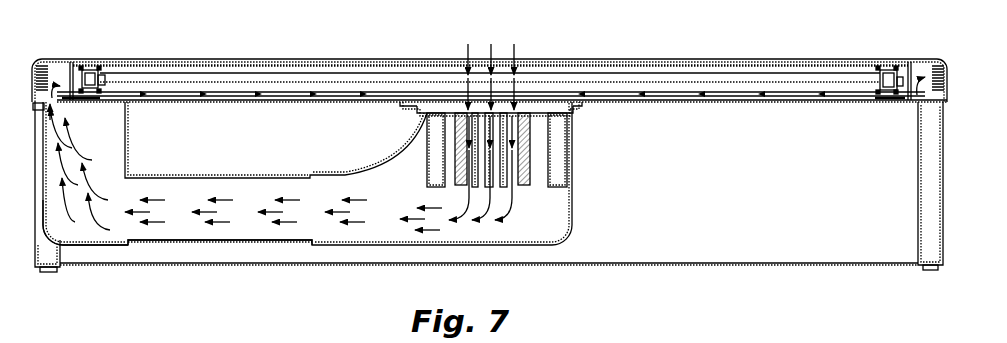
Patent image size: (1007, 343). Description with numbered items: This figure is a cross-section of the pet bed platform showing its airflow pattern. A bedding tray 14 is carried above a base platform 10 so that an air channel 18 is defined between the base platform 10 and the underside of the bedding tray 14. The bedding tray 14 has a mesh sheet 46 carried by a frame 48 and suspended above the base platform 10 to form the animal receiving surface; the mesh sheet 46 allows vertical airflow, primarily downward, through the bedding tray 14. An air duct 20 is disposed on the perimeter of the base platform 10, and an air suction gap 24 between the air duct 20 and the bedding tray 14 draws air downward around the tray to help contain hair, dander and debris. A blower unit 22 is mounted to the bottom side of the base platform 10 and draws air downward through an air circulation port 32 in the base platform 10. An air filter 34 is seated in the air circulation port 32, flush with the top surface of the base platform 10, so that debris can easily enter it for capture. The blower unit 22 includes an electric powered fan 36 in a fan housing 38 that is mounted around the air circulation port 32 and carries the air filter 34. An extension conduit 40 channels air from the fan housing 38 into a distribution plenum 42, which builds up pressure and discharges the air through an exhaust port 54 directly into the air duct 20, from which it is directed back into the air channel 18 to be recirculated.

The base platform 10 is at (833, 103).
The bedding tray 14 is at (242, 62).
The air channel 18 is at (780, 102).
The air duct 20 is at (49, 60).
The blower unit 22 is at (562, 229).
The air suction gap 24 is at (72, 67).
The air circulation port 32 is at (583, 105).
The air filter 34 is at (570, 115).
The electric powered fan 36 is at (550, 162).
The fan housing 38 is at (398, 135).
The extension conduit 40 is at (237, 239).
The distribution plenum 42 is at (112, 245).
The mesh sheet 46 is at (568, 64).
The frame 48 is at (610, 73).
The exhaust port 54 is at (63, 118).